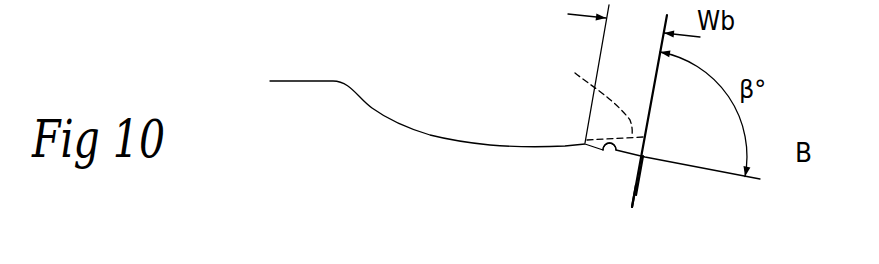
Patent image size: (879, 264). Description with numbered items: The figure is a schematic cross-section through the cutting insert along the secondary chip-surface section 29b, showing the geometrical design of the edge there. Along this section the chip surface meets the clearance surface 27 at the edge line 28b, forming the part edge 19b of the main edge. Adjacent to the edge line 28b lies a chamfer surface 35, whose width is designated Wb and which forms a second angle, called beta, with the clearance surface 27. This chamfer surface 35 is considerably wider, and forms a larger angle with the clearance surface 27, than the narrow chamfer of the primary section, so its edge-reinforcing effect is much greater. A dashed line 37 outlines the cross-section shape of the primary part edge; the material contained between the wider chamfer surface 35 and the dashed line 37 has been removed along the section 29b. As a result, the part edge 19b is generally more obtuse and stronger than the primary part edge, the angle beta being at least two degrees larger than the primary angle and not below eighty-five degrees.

The secondary chip-surface section 29b is at (490, 142).
The chamfer surface 35 is at (610, 148).
The dashed line 37 is at (598, 74).
The edge line 28b is at (643, 152).
The part edge 19b is at (632, 172).
The clearance surface 27 is at (637, 197).